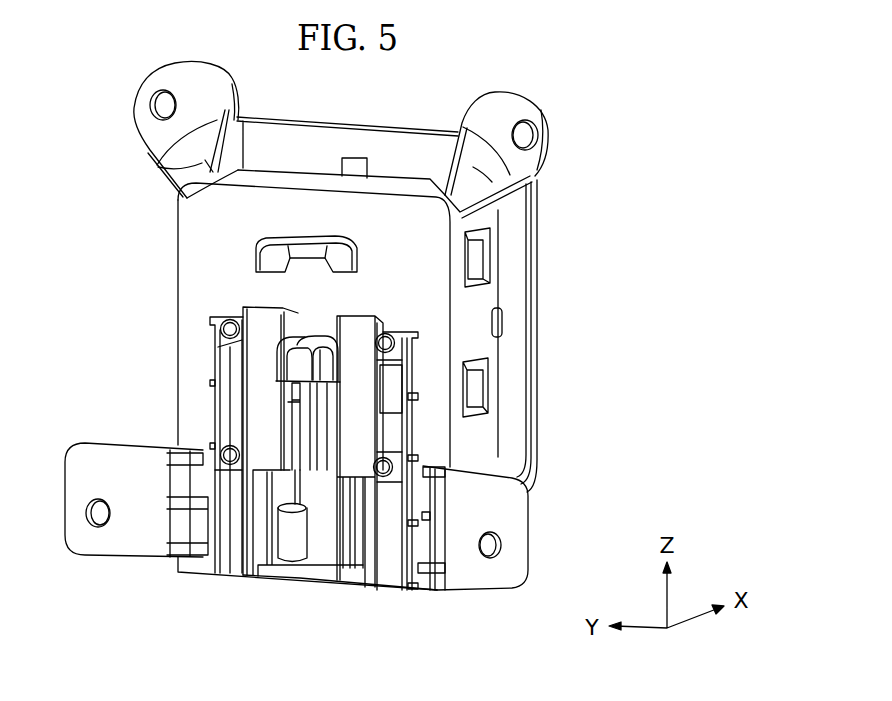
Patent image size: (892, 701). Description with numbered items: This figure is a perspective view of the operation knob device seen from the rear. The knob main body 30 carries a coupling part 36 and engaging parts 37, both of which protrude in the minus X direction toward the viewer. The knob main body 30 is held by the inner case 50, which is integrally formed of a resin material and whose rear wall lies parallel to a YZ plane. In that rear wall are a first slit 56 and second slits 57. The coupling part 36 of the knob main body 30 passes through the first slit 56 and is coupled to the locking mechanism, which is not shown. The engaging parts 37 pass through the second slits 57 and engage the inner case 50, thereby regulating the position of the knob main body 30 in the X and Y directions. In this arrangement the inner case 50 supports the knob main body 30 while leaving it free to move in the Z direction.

The knob main body 30 is at (322, 466).
The coupling part 36 is at (310, 362).
The engaging parts 37 is at (390, 422).
The inner case 50 is at (427, 591).
The first slit 56 is at (287, 415).
The second slits 57 is at (384, 510).